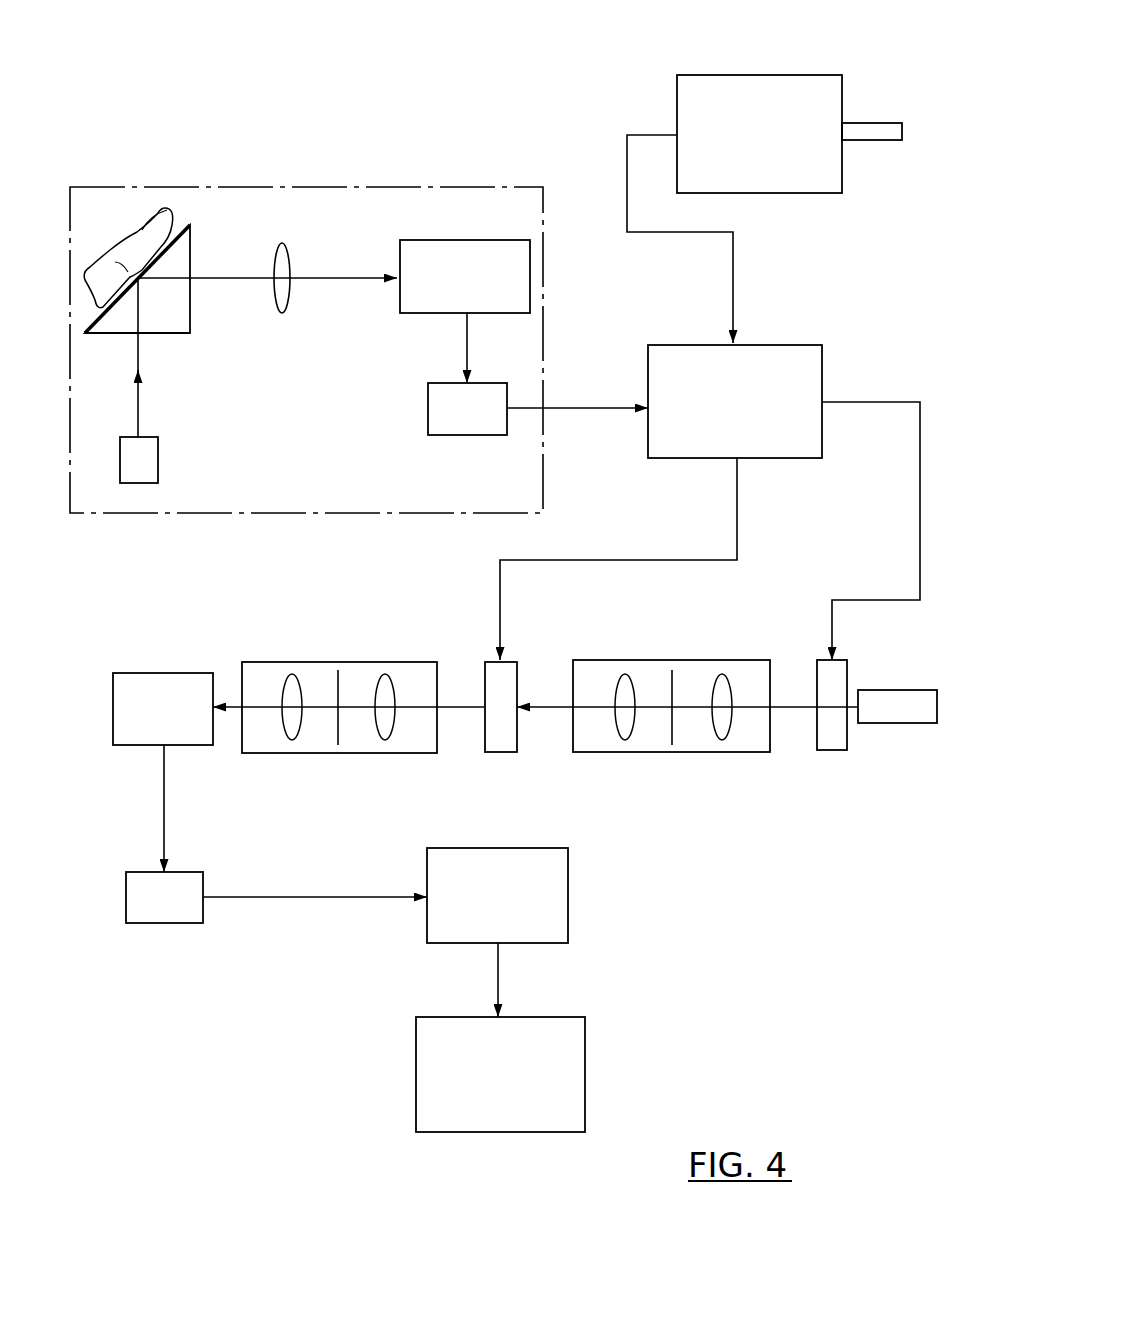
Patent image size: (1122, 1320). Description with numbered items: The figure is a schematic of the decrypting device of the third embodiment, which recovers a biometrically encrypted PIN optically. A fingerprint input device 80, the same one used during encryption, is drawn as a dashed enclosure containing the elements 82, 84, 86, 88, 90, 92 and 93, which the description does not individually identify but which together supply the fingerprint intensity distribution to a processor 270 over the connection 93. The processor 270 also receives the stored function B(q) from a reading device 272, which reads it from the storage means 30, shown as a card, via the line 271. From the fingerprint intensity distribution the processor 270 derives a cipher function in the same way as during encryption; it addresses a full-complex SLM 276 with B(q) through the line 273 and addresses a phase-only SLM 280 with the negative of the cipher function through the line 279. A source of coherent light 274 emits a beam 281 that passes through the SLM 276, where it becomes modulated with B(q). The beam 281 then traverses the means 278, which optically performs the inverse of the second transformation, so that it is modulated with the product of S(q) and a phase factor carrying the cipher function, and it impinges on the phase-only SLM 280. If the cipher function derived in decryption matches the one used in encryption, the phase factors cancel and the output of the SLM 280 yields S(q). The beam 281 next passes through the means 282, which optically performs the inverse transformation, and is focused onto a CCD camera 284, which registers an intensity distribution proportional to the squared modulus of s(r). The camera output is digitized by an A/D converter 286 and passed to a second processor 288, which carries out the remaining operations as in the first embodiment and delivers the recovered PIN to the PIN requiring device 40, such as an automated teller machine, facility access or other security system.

The storage means 30 is at (877, 126).
The PIN requiring device 40 is at (416, 1058).
The input device 80 is at (278, 187).
The light source 82 is at (152, 465).
The prism 84 is at (180, 328).
The finger 86 is at (113, 256).
The lens 88 is at (285, 310).
The camera 90 is at (483, 245).
The A/D converter 92 is at (460, 430).
The digitized fingerprint signal 93 is at (603, 406).
The processor 270 is at (790, 344).
The reading device output line 271 is at (733, 258).
The reading device 272 is at (713, 78).
The processor control line 273 is at (920, 450).
The source of coherent light 274 is at (908, 723).
The full-complex SLM 276 is at (850, 669).
The means performing transformation T2 inverse 278 is at (683, 660).
The processor control line 279 is at (737, 525).
The phase-only SLM 280 is at (500, 745).
The beam 281 is at (540, 705).
The means performing inverse transformation T inverse 282 is at (330, 660).
The CCD camera 284 is at (125, 678).
The A/D converter 286 is at (128, 910).
The processor 288 is at (570, 900).